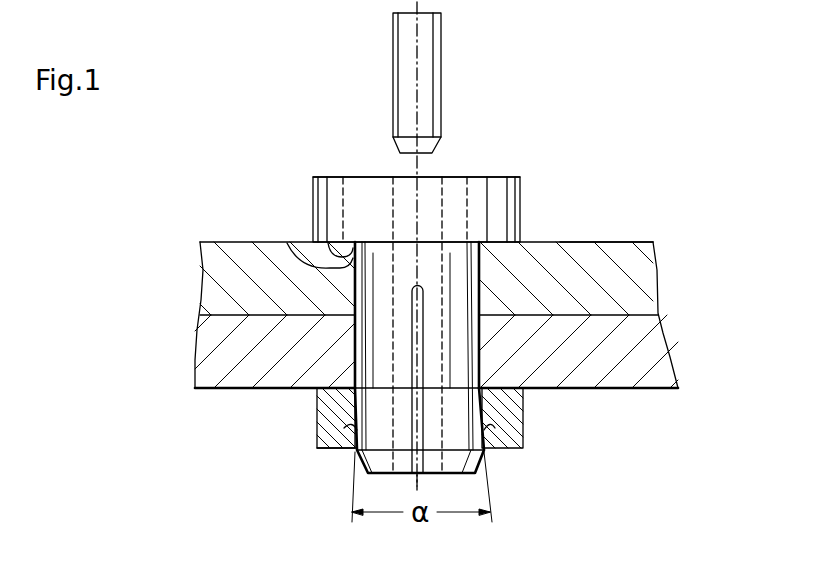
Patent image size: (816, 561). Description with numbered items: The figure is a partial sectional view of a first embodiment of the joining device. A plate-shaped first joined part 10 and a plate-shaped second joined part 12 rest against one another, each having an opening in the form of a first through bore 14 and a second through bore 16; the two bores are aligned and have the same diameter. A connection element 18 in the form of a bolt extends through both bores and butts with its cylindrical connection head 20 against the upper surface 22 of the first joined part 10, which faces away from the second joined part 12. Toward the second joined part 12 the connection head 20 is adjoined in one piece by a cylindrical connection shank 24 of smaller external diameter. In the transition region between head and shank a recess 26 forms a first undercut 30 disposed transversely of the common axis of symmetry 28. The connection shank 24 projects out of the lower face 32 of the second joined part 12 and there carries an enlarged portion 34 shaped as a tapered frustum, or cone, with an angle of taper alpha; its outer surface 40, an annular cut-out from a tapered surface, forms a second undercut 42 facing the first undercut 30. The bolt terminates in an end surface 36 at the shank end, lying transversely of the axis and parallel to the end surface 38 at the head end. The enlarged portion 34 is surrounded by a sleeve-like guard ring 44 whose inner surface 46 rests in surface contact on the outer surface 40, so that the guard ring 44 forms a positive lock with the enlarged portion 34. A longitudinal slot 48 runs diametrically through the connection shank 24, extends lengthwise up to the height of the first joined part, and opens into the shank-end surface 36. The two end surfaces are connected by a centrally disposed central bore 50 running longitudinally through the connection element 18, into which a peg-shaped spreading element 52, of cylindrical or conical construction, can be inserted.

The first joined part 10 is at (640, 287).
The second joined part 12 is at (658, 361).
The first through bore 14 is at (545, 243).
The second through bore 16 is at (525, 390).
The connection element 18 is at (347, 163).
The connection head 20 is at (508, 202).
The upper surface 22 is at (613, 240).
The connection shank 24 is at (380, 328).
The recess 26 is at (320, 248).
The axis of symmetry 28 is at (420, 58).
The first undercut 30 is at (328, 256).
The lower face 32 is at (600, 389).
The enlarged portion 34 is at (486, 452).
The end surface at the shank end 36 is at (387, 477).
The end surface at the head end 38 is at (477, 177).
The outer surface 40 is at (523, 450).
The second undercut 42 is at (323, 447).
The guard ring 44 is at (325, 413).
The inner surface 46 is at (360, 448).
The longitudinal slot 48 is at (426, 325).
The central bore 50 is at (400, 196).
The spreading element 52 is at (425, 104).